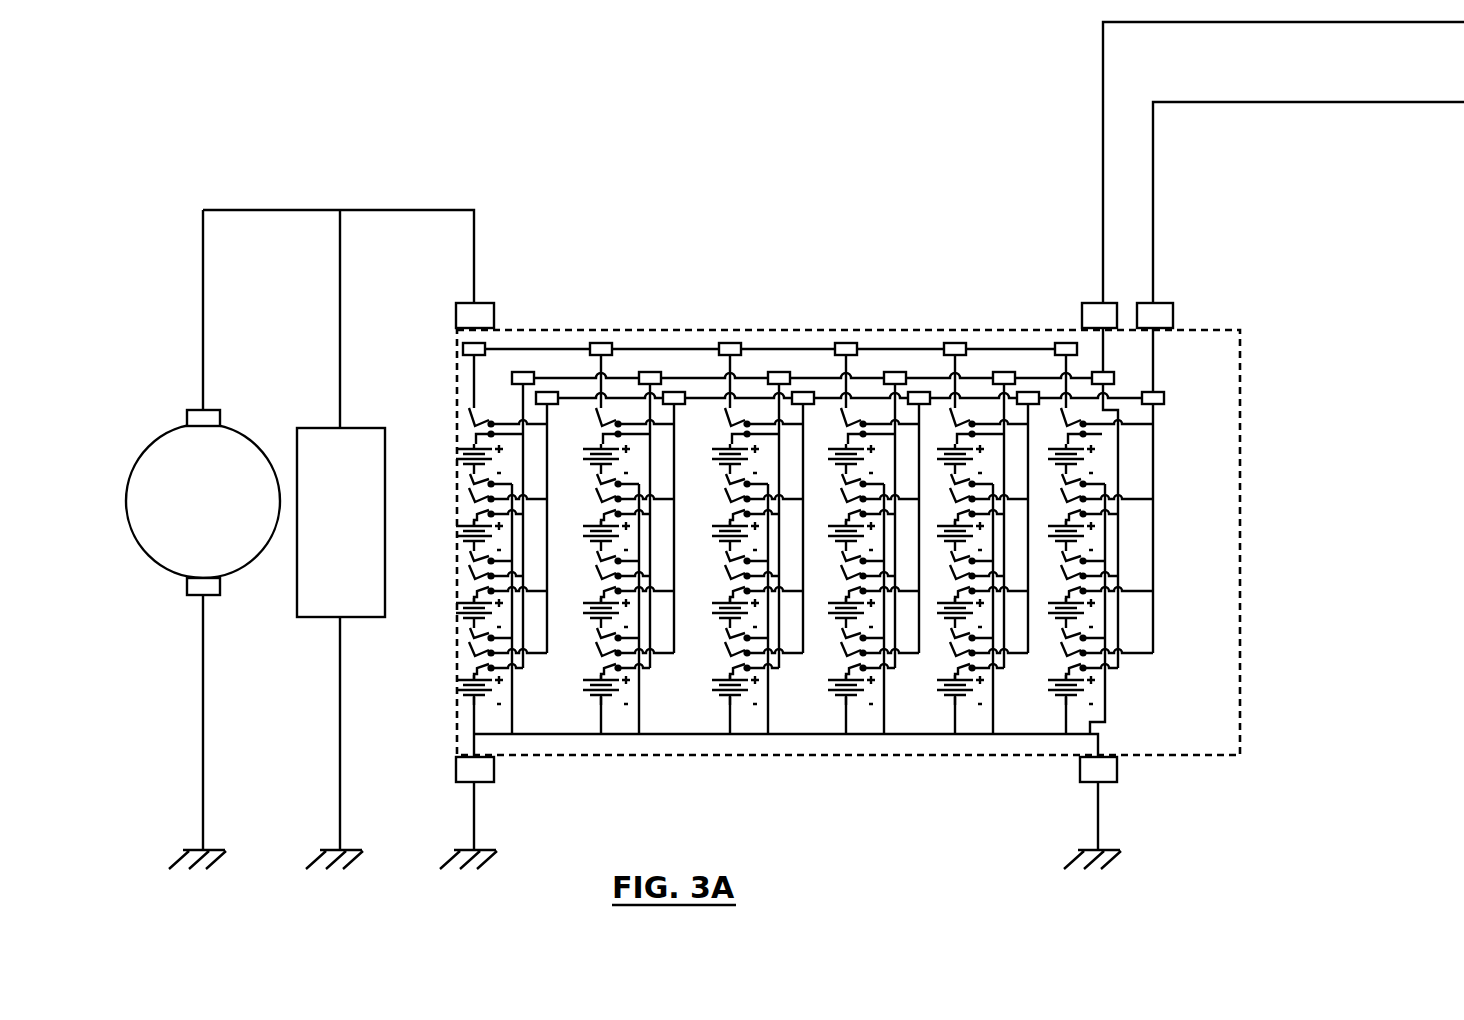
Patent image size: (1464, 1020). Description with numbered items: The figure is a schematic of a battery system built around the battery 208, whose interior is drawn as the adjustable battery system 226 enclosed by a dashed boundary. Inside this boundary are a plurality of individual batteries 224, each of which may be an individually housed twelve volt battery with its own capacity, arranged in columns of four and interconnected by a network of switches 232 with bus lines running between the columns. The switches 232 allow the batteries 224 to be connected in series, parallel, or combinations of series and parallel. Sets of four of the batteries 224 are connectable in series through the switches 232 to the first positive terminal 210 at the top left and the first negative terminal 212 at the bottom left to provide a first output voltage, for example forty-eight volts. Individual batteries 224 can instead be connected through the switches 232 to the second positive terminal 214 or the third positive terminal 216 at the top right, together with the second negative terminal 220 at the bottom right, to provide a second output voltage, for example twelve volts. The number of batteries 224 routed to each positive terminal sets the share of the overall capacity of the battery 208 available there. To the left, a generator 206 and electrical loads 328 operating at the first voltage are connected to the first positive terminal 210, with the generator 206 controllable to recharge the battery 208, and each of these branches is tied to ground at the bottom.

The generator 206 is at (150, 446).
The 48 V loads 328 is at (323, 428).
The battery 208 is at (787, 329).
The first positive terminal 210 is at (488, 304).
The first negative terminal 212 is at (494, 770).
The second positive terminal 214 is at (1086, 303).
The third positive terminal 216 is at (1170, 330).
The second negative terminal 220 is at (1117, 770).
The batteries 224 is at (451, 448).
The adjustable battery system 226 is at (1150, 690).
The switches 232 is at (453, 414).